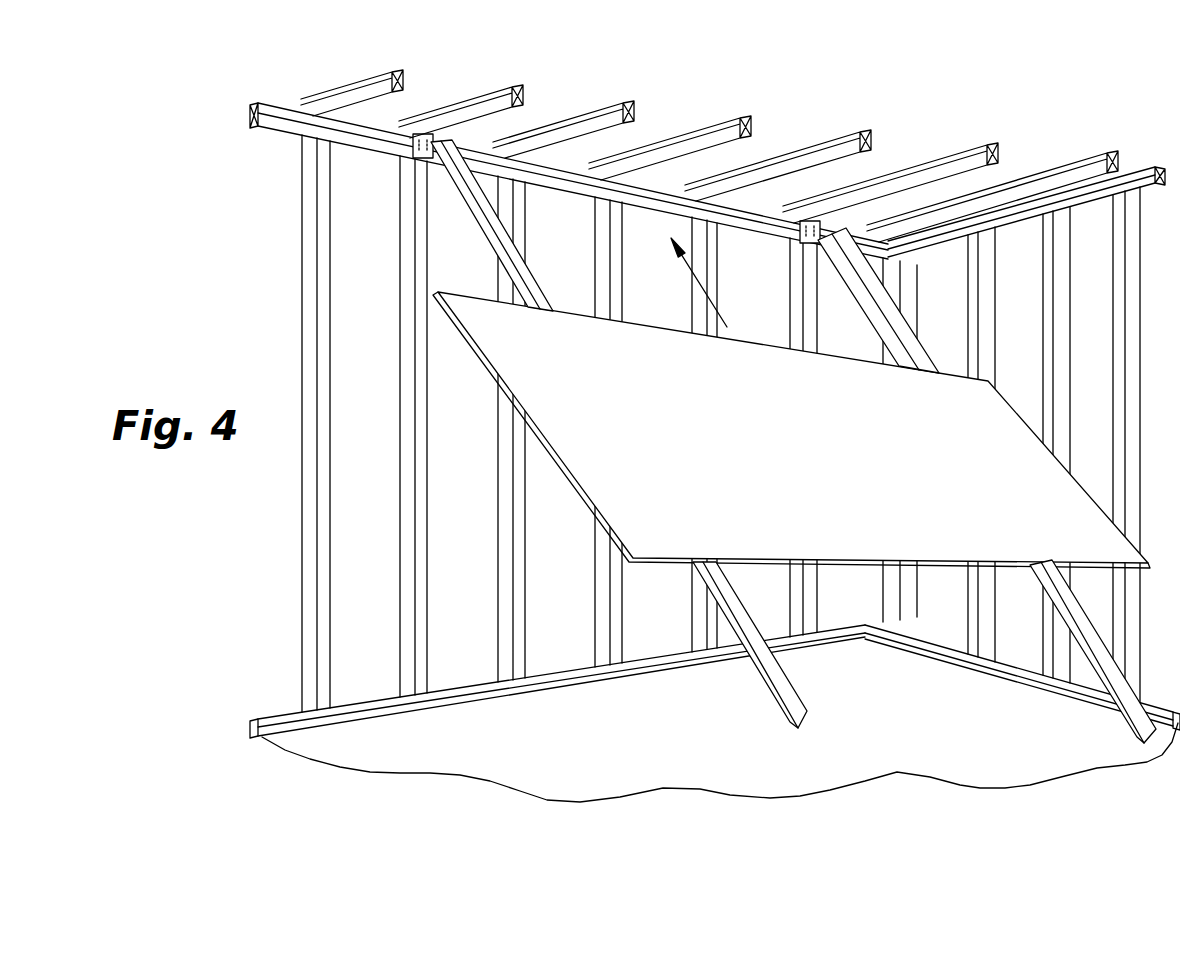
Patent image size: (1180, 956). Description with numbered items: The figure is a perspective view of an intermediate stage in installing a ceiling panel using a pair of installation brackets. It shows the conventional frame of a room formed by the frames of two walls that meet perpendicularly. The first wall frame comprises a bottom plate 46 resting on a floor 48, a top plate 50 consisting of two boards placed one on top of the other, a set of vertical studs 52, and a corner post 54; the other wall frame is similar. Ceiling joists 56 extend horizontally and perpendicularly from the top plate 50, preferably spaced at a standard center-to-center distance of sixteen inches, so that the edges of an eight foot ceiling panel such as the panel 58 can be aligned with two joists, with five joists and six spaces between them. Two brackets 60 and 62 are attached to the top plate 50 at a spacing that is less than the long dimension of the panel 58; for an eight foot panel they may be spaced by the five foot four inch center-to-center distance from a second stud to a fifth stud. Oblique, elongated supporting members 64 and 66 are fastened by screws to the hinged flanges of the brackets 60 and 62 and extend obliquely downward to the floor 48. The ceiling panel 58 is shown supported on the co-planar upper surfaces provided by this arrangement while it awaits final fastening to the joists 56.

The bottom plate 46 is at (447, 683).
The floor 48 is at (697, 772).
The top plate 50 is at (275, 133).
The vertical studs 52 is at (310, 578).
The corner post 54 is at (896, 578).
The ceiling joists 56 is at (351, 93).
The ceiling panel 58 is at (822, 456).
The bracket 60 is at (418, 165).
The bracket 62 is at (804, 244).
The supporting member 64 is at (489, 221).
The supporting member 66 is at (868, 296).